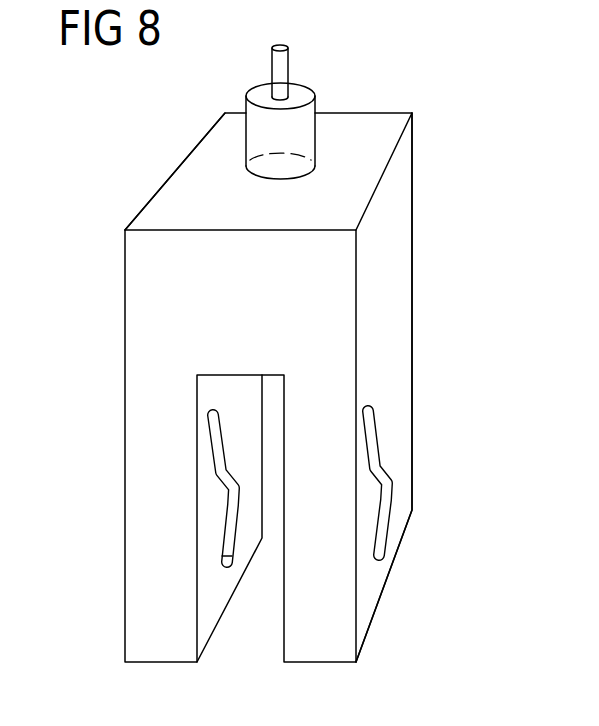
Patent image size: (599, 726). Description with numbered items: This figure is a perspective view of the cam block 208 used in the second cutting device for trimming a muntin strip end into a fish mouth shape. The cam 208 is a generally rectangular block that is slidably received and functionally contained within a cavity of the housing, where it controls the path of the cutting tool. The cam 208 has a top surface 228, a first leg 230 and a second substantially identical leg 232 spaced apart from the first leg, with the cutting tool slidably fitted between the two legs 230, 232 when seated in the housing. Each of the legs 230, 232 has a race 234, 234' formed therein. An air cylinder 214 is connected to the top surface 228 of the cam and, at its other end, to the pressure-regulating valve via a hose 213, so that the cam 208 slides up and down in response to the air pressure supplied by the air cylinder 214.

The cam block 208 is at (374, 130).
The hose 213 is at (286, 52).
The air cylinder 214 is at (248, 118).
The top surface 228 is at (202, 182).
The first leg 230 is at (390, 315).
The second leg 232 is at (208, 505).
The race 234 is at (429, 483).
The race 234' is at (258, 626).